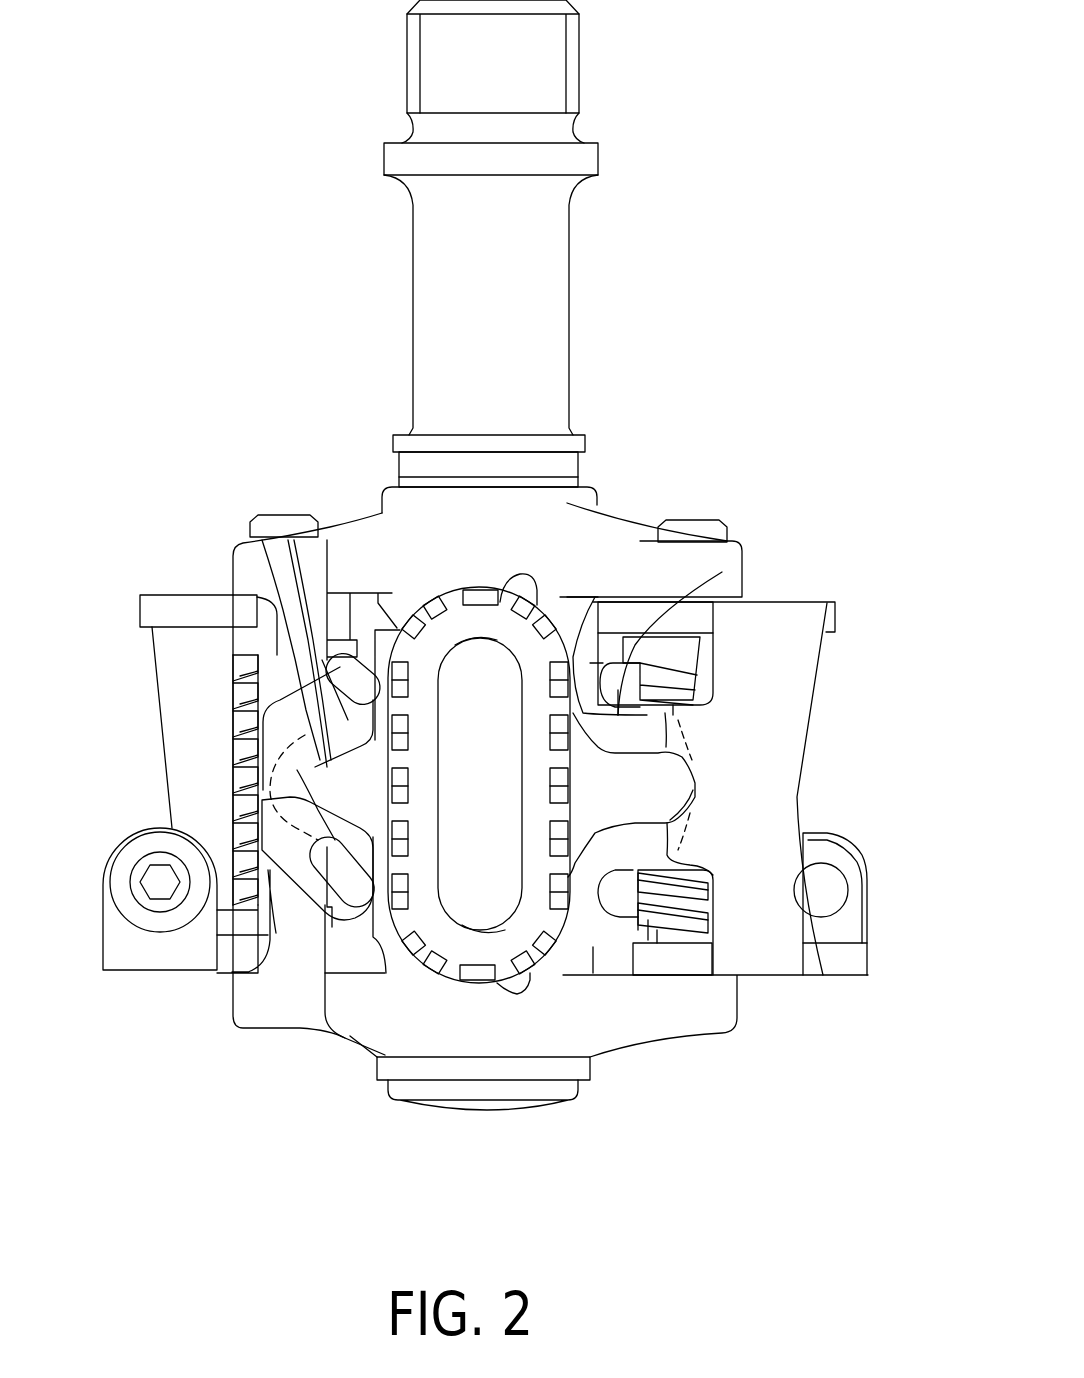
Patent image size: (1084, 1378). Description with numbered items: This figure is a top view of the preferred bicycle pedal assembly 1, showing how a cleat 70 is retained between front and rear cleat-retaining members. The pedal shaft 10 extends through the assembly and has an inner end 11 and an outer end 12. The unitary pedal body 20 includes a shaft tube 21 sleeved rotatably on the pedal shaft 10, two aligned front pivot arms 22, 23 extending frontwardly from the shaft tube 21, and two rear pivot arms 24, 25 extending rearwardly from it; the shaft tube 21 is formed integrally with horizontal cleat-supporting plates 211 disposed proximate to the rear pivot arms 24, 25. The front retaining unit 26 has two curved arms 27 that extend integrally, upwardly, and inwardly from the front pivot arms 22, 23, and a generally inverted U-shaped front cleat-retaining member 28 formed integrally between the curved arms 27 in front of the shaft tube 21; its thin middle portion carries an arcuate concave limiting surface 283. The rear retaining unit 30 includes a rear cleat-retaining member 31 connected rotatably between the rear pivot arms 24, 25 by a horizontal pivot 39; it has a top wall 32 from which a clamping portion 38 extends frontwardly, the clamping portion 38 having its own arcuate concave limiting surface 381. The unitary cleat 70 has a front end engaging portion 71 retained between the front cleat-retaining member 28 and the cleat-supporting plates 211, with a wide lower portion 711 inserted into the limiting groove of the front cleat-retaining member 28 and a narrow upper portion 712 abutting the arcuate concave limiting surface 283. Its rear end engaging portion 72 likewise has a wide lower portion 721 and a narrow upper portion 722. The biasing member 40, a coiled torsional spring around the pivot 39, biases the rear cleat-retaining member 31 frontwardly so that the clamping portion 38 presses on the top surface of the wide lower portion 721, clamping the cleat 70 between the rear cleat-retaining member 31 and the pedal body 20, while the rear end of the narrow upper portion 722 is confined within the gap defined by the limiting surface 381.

The bicycle pedal assembly 1 is at (398, 68).
The pedal shaft 10 is at (428, 212).
The inner end 11 is at (580, 70).
The outer end 12 is at (568, 320).
The pedal body 20 is at (334, 518).
The shaft tube 21 is at (598, 500).
The front pivot arm 22 is at (365, 525).
The front pivot arm 23 is at (350, 1033).
The rear pivot arm 24 is at (637, 543).
The rear pivot arm 25 is at (607, 1038).
The horizontal cleat-supporting plate 211 is at (517, 990).
The front retaining unit 26 is at (236, 722).
The curved arm 27 is at (233, 655).
The front cleat-retaining member 28 is at (272, 752).
The arcuate concave limiting surface 283 is at (272, 798).
The rear retaining unit 30 is at (815, 588).
The rear cleat-retaining member 31 is at (772, 985).
The top wall 32 is at (797, 968).
The clamping portion 38 is at (688, 862).
The arcuate concave limiting surface 381 is at (700, 800).
The horizontal pivot 39 is at (712, 530).
The biasing member 40 is at (649, 948).
The cleat 70 is at (436, 985).
The front end engaging portion 71 is at (333, 762).
The wide lower portion 711 is at (300, 575).
The narrow upper portion 712 is at (348, 720).
The rear end engaging portion 72 is at (722, 572).
The wide lower portion 721 is at (655, 725).
The narrow upper portion 722 is at (673, 777).